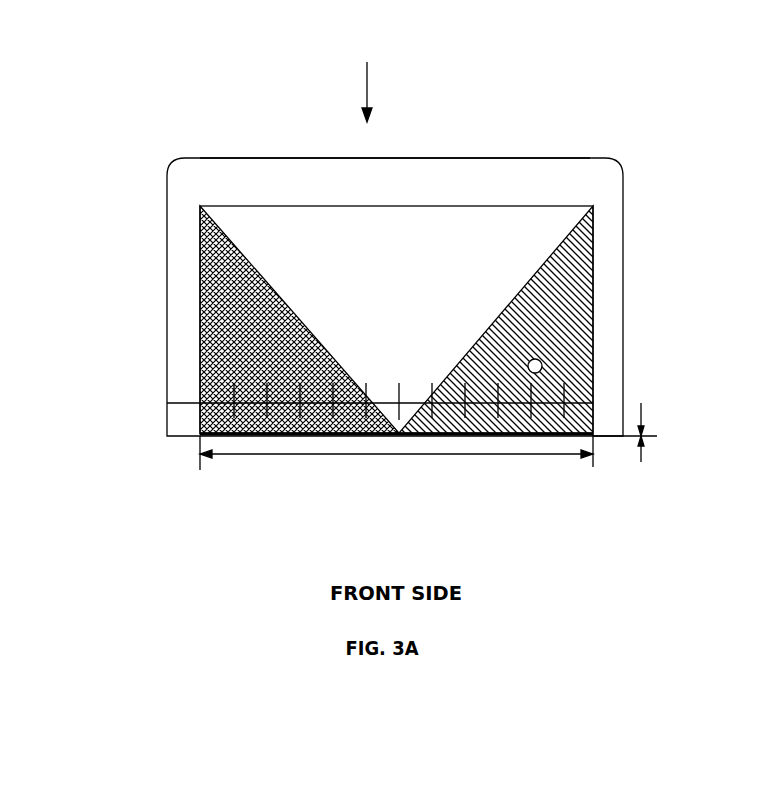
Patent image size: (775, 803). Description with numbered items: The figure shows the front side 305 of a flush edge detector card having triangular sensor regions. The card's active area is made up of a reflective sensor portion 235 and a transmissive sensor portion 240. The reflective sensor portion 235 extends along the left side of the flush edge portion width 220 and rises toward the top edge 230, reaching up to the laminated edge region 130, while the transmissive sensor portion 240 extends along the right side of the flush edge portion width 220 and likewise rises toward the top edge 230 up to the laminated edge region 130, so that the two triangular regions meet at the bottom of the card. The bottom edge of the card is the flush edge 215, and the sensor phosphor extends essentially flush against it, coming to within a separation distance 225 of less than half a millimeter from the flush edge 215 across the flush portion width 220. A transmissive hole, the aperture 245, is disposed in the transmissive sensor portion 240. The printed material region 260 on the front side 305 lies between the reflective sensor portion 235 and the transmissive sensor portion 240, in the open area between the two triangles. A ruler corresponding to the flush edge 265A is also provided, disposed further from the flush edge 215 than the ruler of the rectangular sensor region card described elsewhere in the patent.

The laminated edge region 130 is at (272, 182).
The top edge 230 is at (445, 157).
The front side 305 is at (366, 77).
The printed material region 260 is at (547, 232).
The transmissive sensor portion 240 is at (567, 303).
The reflective sensor portion 235 is at (234, 372).
The ruler corresponding to the flush edge 265A is at (195, 403).
The flush portion width 220 is at (290, 455).
The flush edge 215 is at (399, 436).
The aperture 245 is at (550, 436).
The separation distance 225 is at (657, 436).